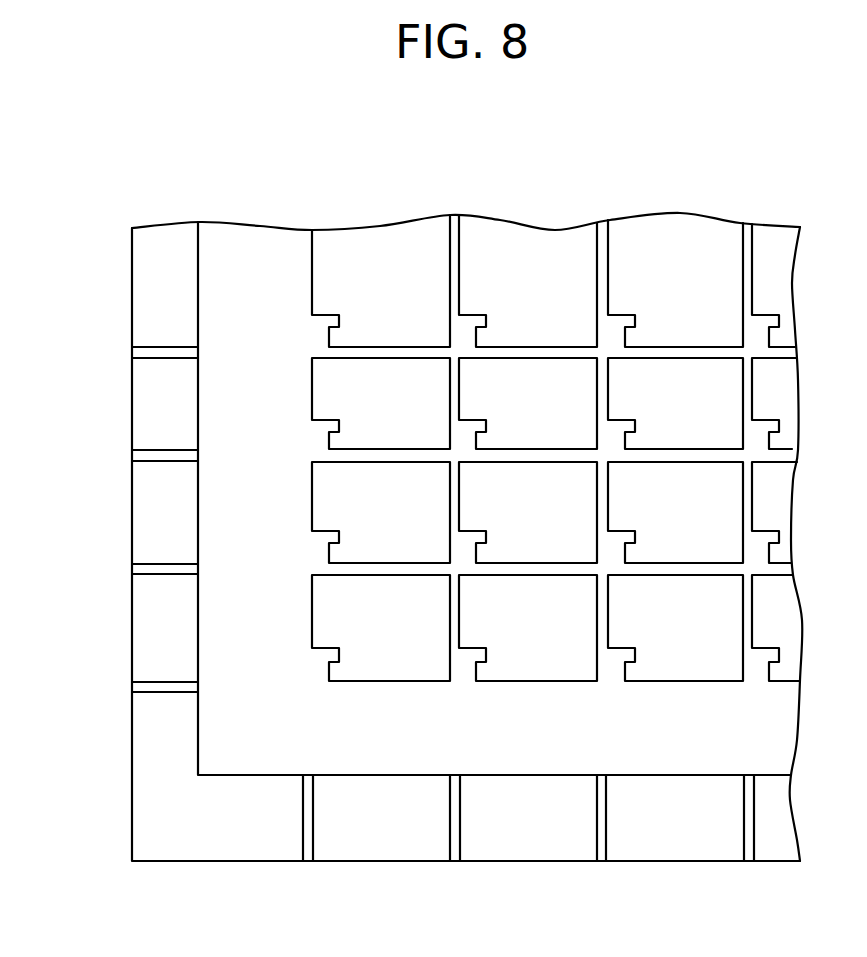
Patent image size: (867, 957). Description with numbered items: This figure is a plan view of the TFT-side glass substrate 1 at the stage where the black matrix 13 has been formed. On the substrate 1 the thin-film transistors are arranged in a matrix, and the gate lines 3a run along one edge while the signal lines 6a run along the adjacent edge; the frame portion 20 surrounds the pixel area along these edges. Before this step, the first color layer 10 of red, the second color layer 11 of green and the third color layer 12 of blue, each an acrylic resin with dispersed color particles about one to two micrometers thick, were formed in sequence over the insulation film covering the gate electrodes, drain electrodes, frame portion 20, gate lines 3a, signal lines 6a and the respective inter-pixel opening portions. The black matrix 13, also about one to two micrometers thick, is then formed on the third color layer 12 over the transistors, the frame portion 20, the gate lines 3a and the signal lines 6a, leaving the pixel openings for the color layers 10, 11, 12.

The TFT-side glass substrate 1 is at (570, 840).
The gate lines 3a is at (166, 686).
The signal lines 6a is at (308, 815).
The first color layer 10 is at (388, 240).
The second color layer 11 is at (533, 243).
The third color layer 12 is at (673, 237).
The black matrix 13 is at (258, 238).
The frame portion 20 is at (118, 692).